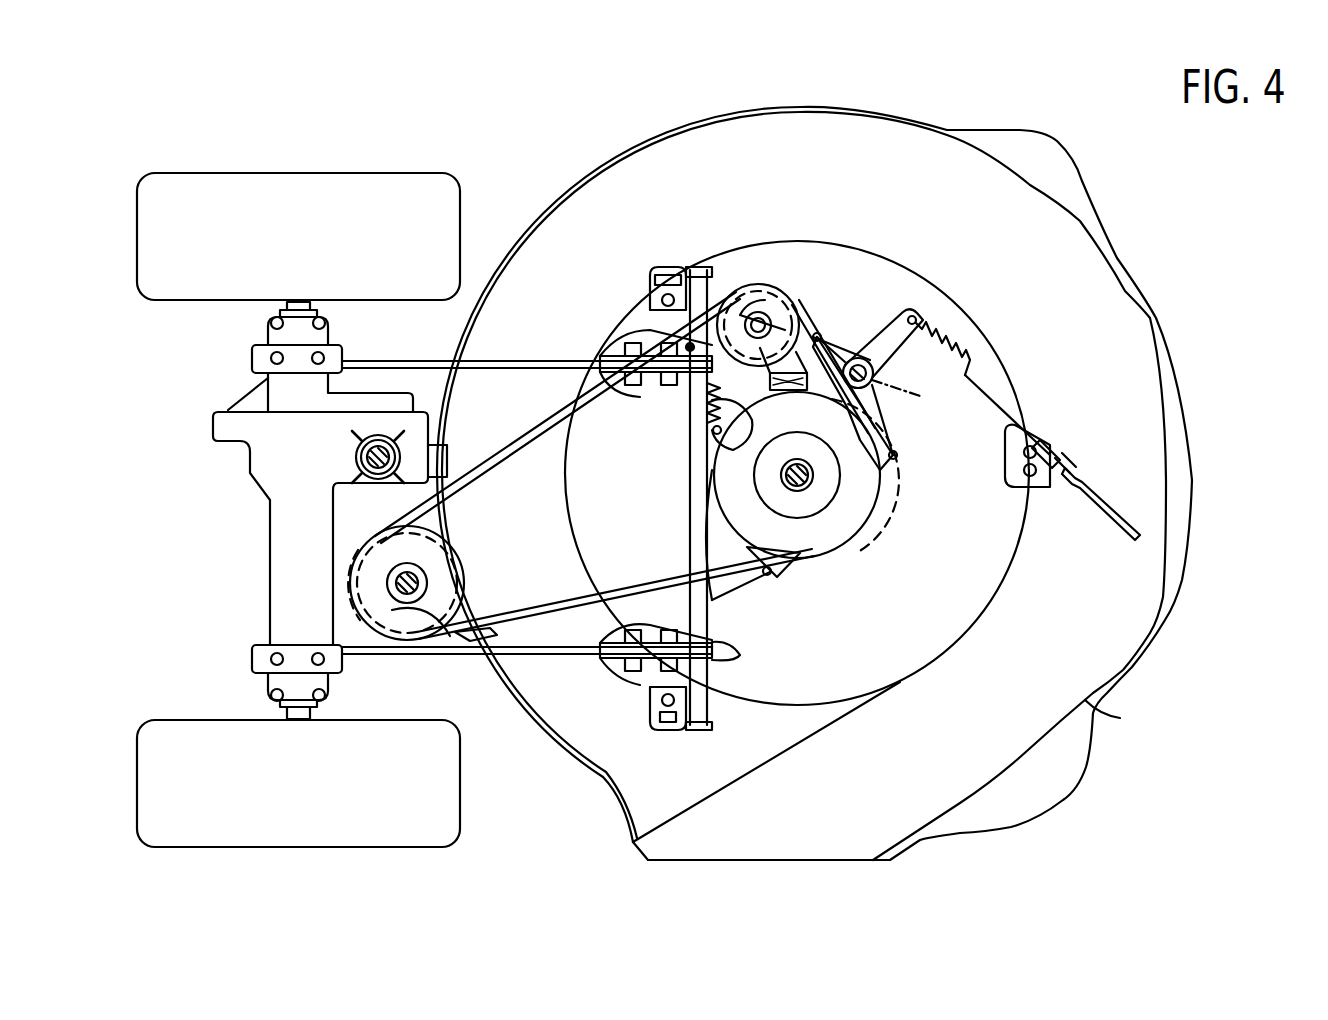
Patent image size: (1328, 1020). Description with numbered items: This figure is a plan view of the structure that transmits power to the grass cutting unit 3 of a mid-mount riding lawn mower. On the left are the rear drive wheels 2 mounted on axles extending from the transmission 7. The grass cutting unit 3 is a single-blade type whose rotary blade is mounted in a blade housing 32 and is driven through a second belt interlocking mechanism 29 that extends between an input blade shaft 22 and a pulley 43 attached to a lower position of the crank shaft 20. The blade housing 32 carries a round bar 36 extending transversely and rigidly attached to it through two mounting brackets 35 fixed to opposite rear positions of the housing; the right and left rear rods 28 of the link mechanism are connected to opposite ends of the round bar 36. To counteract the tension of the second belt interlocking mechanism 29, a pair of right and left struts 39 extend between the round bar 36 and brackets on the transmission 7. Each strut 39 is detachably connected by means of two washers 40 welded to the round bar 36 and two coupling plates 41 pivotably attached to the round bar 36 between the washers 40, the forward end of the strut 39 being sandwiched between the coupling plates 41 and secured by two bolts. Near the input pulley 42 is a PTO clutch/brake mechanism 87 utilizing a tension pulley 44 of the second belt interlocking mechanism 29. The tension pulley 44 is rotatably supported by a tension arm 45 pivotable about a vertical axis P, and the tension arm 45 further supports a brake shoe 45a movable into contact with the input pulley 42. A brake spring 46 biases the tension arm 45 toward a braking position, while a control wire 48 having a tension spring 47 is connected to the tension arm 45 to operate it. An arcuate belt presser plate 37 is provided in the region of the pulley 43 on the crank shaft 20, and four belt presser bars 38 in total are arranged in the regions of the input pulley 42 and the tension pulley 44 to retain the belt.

The rear drive wheels 2 is at (238, 190).
The grass cutting unit 3 is at (1139, 280).
The transmission 7 is at (267, 477).
The crank shaft 20 is at (418, 577).
The input blade shaft 22 is at (805, 483).
The rear rods 28 is at (712, 270).
The second belt interlocking mechanism 29 is at (828, 574).
The blade housing 32 is at (1085, 700).
The mounting brackets 35 is at (660, 265).
The round bar 36 is at (712, 603).
The arcuate belt presser plate 37 is at (362, 637).
The belt presser bars 38 is at (648, 330).
The struts 39 is at (513, 357).
The washers 40 is at (660, 340).
The coupling plates 41 is at (665, 350).
The input pulley 42 is at (878, 520).
The pulley 43 is at (460, 573).
The tension pulley 44 is at (770, 300).
The tension arm 45 is at (905, 318).
The brake shoe 45a is at (880, 440).
The brake spring 46 is at (770, 392).
The tension spring 47 is at (960, 350).
The control wire 48 is at (1020, 415).
The PTO clutch/brake mechanism 87 is at (875, 286).
The vertical axis P is at (904, 399).